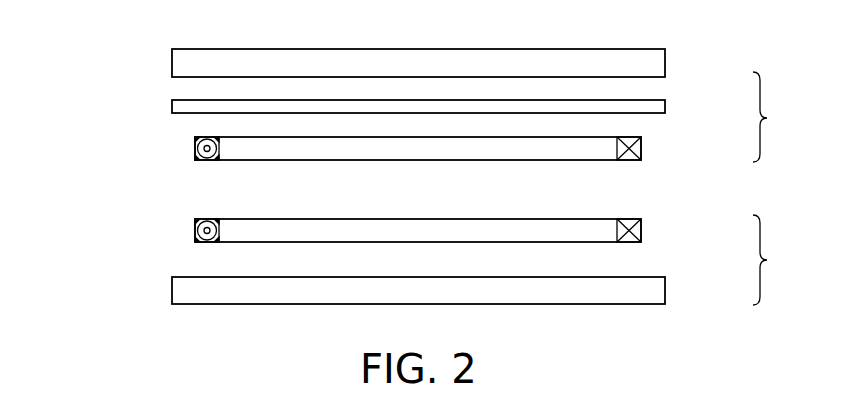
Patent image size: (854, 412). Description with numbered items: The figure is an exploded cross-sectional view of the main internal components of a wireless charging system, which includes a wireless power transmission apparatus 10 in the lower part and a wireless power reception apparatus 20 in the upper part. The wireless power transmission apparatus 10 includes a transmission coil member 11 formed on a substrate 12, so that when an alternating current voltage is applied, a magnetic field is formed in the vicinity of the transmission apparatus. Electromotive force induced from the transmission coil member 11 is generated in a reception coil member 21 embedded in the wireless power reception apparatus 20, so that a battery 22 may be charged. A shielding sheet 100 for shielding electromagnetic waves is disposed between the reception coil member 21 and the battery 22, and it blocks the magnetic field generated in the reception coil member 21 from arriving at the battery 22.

The shielding sheet 100 is at (172, 112).
The battery 22 is at (653, 62).
The reception coil member 21 is at (641, 146).
The wireless power reception apparatus 20 is at (775, 117).
The transmission coil member 11 is at (641, 233).
The substrate 12 is at (653, 289).
The wireless power transmission apparatus 10 is at (775, 260).